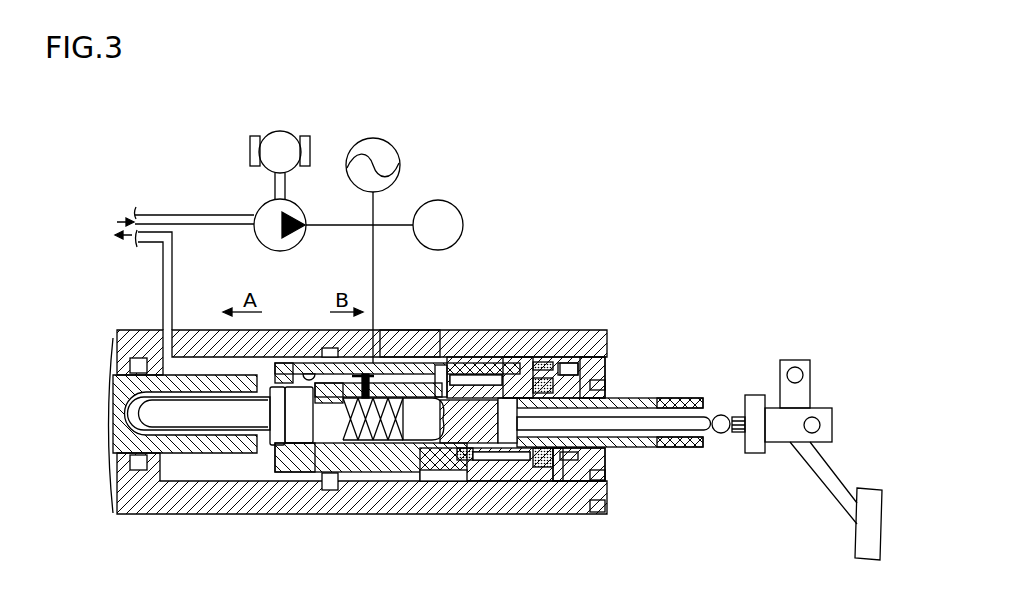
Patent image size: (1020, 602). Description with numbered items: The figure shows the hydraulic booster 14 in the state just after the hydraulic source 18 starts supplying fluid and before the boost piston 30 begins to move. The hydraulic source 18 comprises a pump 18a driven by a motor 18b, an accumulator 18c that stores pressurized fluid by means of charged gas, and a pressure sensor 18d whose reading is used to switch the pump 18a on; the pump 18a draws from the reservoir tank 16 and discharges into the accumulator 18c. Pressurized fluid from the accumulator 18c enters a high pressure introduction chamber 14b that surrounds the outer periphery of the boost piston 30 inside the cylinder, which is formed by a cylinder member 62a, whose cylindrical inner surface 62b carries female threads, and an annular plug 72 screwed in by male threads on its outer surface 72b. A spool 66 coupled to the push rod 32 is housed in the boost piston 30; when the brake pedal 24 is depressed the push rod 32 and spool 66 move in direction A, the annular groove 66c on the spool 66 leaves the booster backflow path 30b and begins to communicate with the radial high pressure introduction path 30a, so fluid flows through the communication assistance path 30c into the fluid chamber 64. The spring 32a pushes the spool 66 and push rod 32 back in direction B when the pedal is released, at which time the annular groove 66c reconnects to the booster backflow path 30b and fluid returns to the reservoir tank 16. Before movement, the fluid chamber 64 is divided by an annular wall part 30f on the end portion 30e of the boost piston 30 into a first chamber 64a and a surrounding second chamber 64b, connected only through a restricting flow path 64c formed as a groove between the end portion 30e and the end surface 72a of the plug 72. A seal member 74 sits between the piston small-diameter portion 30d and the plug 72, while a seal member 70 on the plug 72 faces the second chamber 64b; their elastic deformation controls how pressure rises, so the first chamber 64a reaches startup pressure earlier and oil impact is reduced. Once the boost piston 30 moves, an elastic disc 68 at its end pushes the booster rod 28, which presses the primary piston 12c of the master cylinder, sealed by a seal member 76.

The hydraulic booster 14 is at (209, 526).
The high pressure introduction chamber 14b is at (406, 352).
The primary piston 12c is at (179, 372).
The reservoir tank 16 is at (173, 268).
The hydraulic source 18 is at (356, 218).
The pump 18a is at (258, 208).
The motor 18b is at (288, 131).
The accumulator 18c is at (391, 144).
The pressure sensor 18d is at (455, 208).
The brake pedal 24 is at (845, 482).
The booster rod 28 is at (236, 428).
The boost piston 30 is at (386, 452).
The high pressure introduction path 30a is at (461, 366).
The booster backflow path 30b is at (306, 372).
The communication assistance path 30c is at (513, 462).
The piston small-diameter portion 30d is at (690, 448).
The end portion 30e is at (606, 386).
The annular wall part 30f is at (535, 366).
The push rod 32 is at (670, 447).
The spring 32a is at (323, 442).
The cylinder member 62a is at (583, 482).
The cylindrical inner surface 62b is at (584, 366).
The fluid chamber 64 is at (532, 484).
The first chamber 64a is at (606, 488).
The second chamber 64b is at (548, 462).
The restricting flow path 64c is at (606, 508).
The spool 66 is at (425, 432).
The annular groove 66c is at (471, 462).
The disc 68 is at (299, 438).
The seal member 70 is at (572, 366).
The plug 72 is at (608, 372).
The end surface 72a is at (544, 366).
The outer surface 72b is at (610, 340).
The seal member 74 is at (493, 366).
The seal member 76 is at (141, 358).